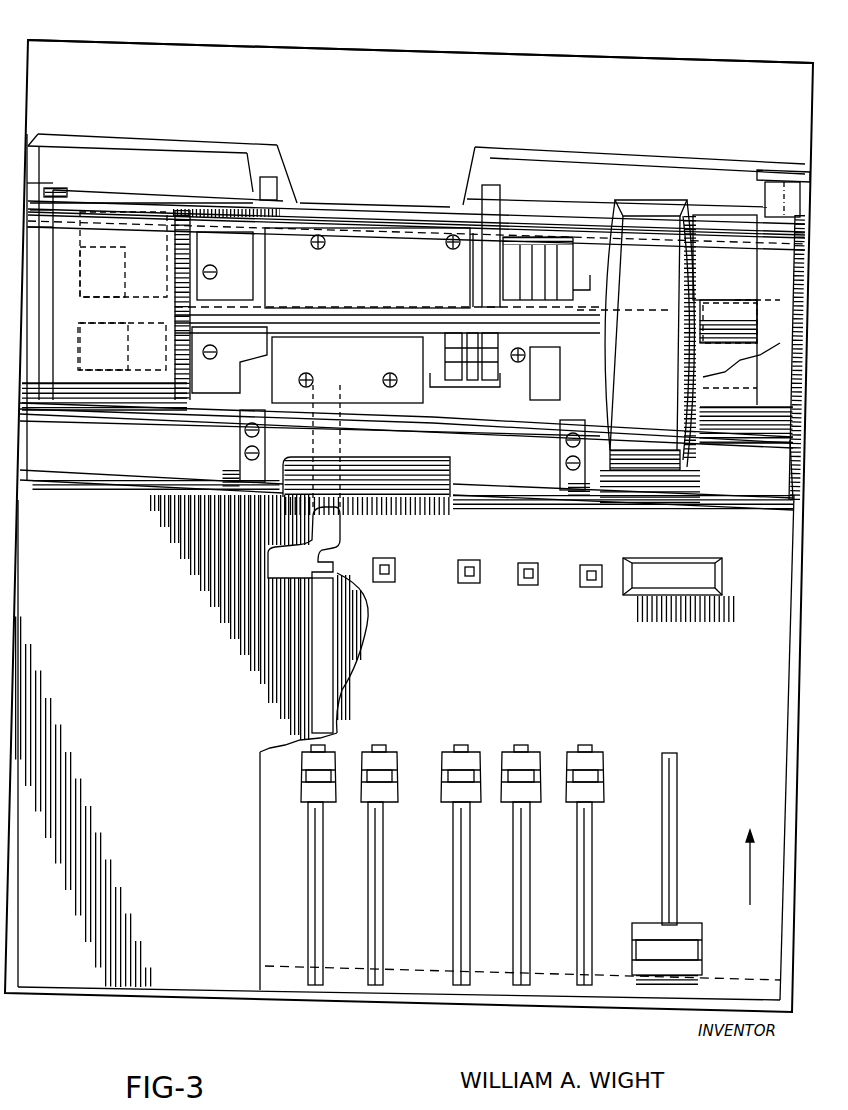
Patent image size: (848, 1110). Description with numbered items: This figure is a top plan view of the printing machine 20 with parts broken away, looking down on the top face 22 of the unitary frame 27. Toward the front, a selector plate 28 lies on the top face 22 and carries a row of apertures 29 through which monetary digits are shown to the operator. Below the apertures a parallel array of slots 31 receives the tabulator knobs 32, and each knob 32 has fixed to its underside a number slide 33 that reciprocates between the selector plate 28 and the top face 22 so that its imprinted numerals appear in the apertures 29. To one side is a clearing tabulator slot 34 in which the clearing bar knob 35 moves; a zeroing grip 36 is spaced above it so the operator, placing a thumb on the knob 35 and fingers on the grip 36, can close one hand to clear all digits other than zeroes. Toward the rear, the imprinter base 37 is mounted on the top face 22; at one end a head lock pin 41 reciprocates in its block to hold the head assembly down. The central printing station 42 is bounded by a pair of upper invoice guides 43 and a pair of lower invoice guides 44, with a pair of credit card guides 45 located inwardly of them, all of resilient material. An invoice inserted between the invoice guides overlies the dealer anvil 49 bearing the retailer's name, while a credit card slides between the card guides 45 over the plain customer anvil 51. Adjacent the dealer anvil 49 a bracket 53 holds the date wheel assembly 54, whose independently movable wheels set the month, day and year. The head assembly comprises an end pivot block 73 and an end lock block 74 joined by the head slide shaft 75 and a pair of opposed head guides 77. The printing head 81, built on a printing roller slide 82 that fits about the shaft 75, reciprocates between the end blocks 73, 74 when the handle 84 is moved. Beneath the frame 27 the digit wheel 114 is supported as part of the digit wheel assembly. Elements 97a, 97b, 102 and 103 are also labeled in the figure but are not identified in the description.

The printing machine 20 is at (243, 1012).
The top face 22 is at (300, 681).
The unitary frame 27 is at (415, 58).
The selector plate 28 is at (380, 636).
The apertures 29 is at (378, 560).
The slots 31 is at (380, 960).
The tabulator knobs 32 is at (378, 746).
The number slide 33 is at (320, 645).
The clearing tabulator slot 34 is at (672, 813).
The clearing bar knob 35 is at (685, 930).
The zeroing grip 36 is at (656, 563).
The imprinter base 37 is at (162, 150).
The head lock pin 41 is at (783, 185).
The printing station 42 is at (340, 248).
The upper invoice guides 43 is at (560, 385).
The lower invoice guides 44 is at (265, 275).
The credit card guides 45 is at (275, 195).
The dealer anvil 49 is at (347, 370).
The customer anvil 51 is at (367, 268).
The bracket 53 is at (525, 368).
The date wheel assembly 54 is at (476, 392).
The end pivot block 73 is at (47, 215).
The end lock block 74 is at (783, 440).
The head slide shaft 75 is at (370, 305).
The head guides 77 is at (440, 223).
The printing head 81 is at (668, 182).
The printing roller slide 82 is at (700, 296).
The handle 84 is at (649, 352).
The stop 97a is at (740, 305).
The stop 97b is at (588, 284).
The end block 102 is at (148, 240).
The guide rail 103 is at (382, 204).
The digit wheel 114 is at (537, 232).